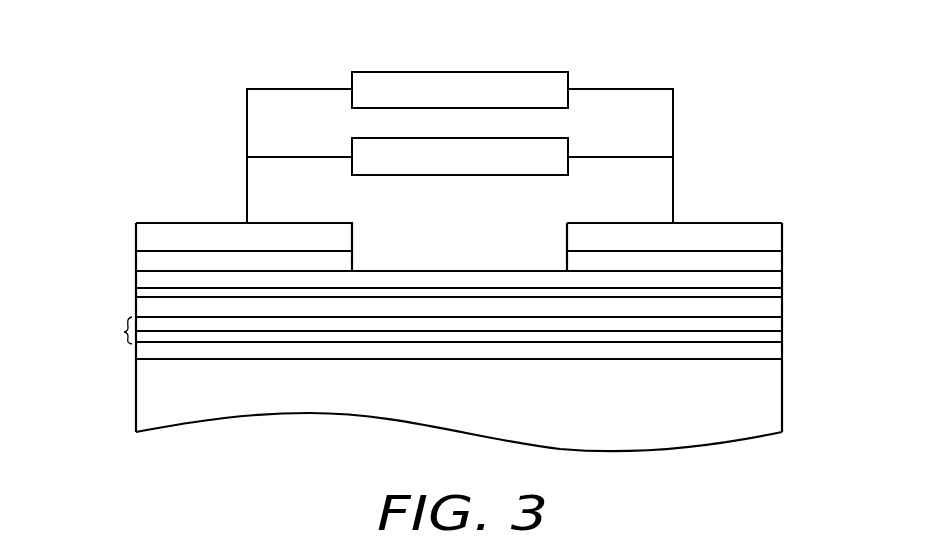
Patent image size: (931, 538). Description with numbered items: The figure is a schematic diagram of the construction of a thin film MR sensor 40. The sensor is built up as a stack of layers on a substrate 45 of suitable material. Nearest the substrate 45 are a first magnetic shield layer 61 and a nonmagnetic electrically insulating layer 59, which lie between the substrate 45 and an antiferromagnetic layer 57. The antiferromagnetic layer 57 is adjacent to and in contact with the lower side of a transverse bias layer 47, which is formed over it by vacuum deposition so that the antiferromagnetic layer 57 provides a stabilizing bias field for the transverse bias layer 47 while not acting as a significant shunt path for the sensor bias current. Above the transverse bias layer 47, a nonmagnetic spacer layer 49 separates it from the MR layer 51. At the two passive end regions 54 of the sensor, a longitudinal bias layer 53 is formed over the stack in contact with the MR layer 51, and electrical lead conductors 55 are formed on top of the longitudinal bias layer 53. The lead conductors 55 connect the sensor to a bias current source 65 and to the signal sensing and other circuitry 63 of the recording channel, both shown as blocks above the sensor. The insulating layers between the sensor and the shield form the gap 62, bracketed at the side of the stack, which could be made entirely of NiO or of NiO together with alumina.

The MR sensor 40 is at (105, 311).
The substrate 45 is at (775, 447).
The transverse bias layer 47 is at (783, 318).
The nonmagnetic spacer layer 49 is at (783, 297).
The MR layer 51 is at (783, 282).
The longitudinal bias layer 53 is at (135, 258).
The passive end regions 54 is at (201, 184).
The electrical lead conductors 55 is at (183, 223).
The antiferromagnetic layer 57 is at (783, 333).
The nonmagnetic electrically insulating layer 59 is at (783, 347).
The first magnetic shield layer 61 is at (783, 360).
The gap 62 is at (123, 333).
The signal sensing and other circuitry 63 is at (472, 68).
The bias current source 65 is at (575, 136).